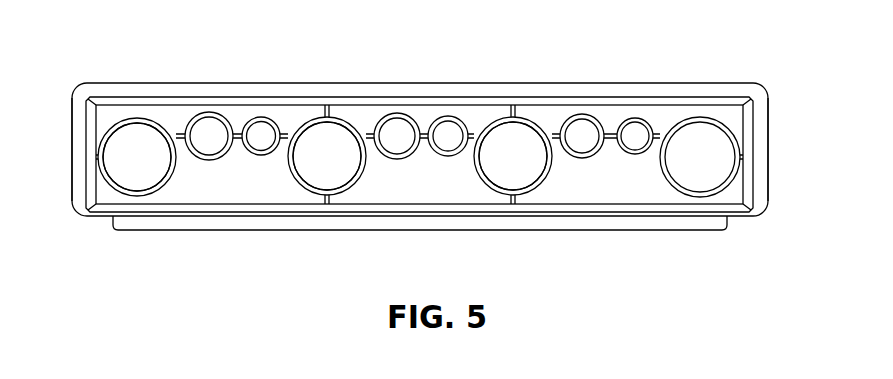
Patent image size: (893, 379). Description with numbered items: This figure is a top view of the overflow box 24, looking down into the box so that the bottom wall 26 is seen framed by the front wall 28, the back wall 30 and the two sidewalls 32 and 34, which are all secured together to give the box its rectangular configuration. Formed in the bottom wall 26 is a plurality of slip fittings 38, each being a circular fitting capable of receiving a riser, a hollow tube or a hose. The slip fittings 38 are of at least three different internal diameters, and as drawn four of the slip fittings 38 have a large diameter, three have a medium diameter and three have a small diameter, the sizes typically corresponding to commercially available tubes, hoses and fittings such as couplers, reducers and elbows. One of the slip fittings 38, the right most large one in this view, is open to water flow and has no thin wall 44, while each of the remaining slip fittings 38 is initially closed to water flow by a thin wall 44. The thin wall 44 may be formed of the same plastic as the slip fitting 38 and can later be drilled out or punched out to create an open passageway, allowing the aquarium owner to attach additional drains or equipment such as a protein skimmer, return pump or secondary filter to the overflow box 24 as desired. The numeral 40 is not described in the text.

The overflow box 24 is at (753, 33).
The bottom wall 26 is at (611, 191).
The front wall 28 is at (730, 217).
The back wall 30 is at (657, 83).
The sidewall 32 is at (72, 141).
The sidewall 34 is at (768, 132).
The slip fitting 38 is at (255, 117).
The cell receiving openings 40 is at (172, 185).
The thin wall 44 is at (128, 165).